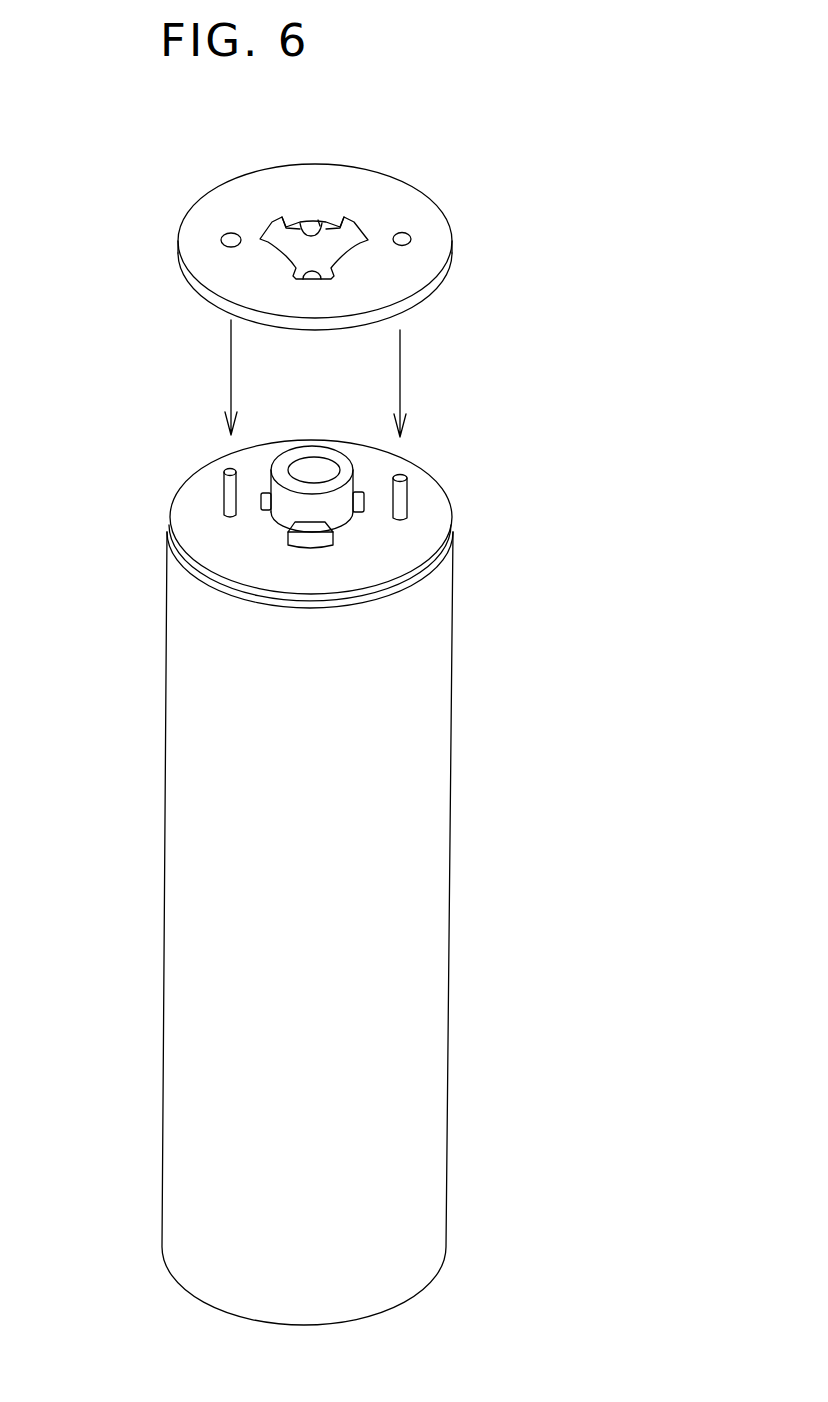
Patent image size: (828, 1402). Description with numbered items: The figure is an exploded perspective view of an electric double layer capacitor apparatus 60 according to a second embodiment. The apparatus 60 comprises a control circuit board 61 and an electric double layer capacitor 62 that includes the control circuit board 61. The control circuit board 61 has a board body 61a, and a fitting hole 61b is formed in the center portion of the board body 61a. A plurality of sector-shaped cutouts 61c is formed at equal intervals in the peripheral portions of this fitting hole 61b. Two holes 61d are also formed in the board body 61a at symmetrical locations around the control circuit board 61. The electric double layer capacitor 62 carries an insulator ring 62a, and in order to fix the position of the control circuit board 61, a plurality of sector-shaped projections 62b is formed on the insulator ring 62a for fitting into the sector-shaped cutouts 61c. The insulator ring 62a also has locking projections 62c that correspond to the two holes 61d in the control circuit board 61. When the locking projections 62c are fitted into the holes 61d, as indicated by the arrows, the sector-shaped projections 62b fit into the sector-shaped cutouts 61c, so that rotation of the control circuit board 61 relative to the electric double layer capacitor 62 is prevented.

The electric double layer capacitor apparatus 60 is at (662, 215).
The control circuit board 61 is at (495, 223).
The board body 61a is at (365, 165).
The fitting hole 61b is at (306, 222).
The sector-shaped cutouts 61c is at (270, 220).
The holes 61d is at (225, 236).
The electric double layer capacitor 62 is at (485, 588).
The insulator ring 62a is at (414, 530).
The sector-shaped projections 62b is at (267, 494).
The locking projections 62c is at (230, 470).